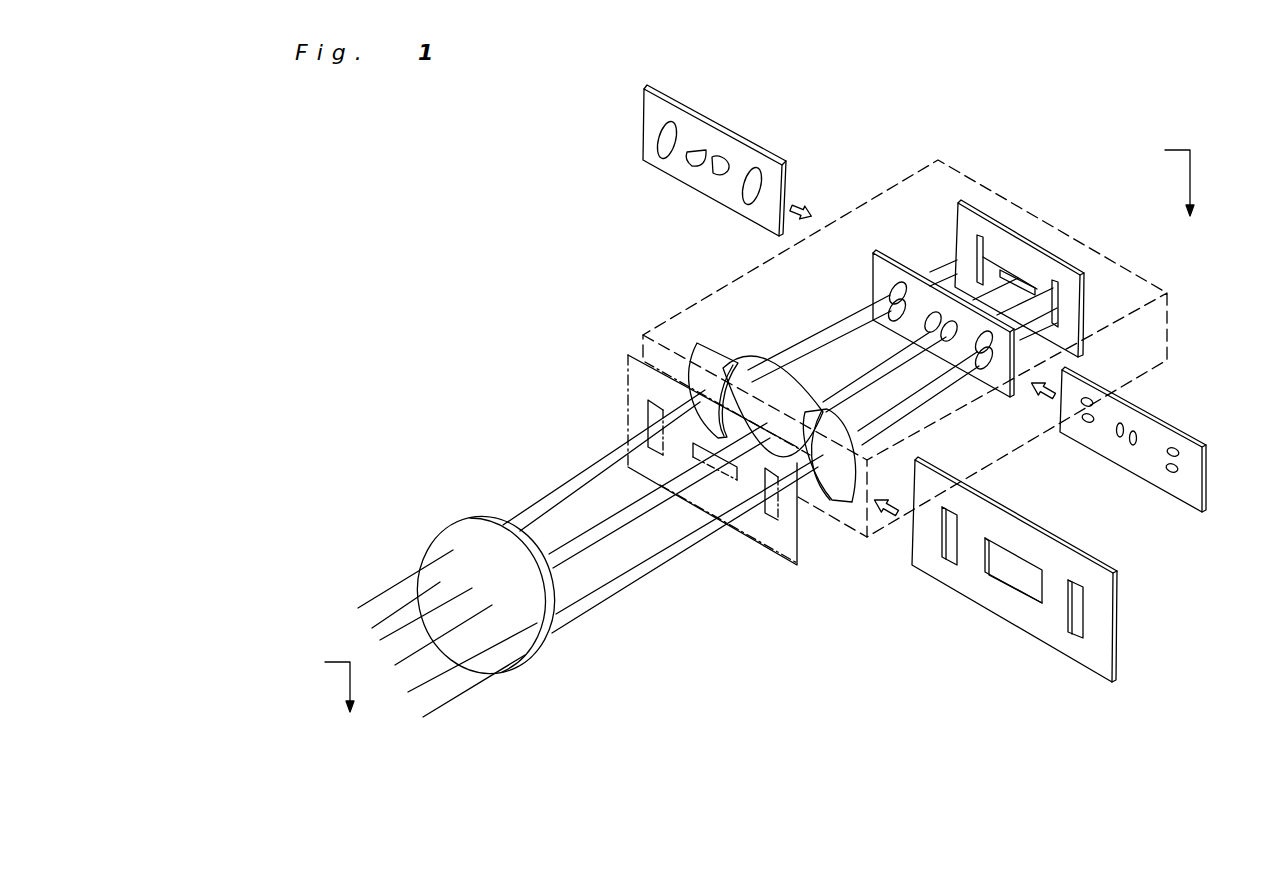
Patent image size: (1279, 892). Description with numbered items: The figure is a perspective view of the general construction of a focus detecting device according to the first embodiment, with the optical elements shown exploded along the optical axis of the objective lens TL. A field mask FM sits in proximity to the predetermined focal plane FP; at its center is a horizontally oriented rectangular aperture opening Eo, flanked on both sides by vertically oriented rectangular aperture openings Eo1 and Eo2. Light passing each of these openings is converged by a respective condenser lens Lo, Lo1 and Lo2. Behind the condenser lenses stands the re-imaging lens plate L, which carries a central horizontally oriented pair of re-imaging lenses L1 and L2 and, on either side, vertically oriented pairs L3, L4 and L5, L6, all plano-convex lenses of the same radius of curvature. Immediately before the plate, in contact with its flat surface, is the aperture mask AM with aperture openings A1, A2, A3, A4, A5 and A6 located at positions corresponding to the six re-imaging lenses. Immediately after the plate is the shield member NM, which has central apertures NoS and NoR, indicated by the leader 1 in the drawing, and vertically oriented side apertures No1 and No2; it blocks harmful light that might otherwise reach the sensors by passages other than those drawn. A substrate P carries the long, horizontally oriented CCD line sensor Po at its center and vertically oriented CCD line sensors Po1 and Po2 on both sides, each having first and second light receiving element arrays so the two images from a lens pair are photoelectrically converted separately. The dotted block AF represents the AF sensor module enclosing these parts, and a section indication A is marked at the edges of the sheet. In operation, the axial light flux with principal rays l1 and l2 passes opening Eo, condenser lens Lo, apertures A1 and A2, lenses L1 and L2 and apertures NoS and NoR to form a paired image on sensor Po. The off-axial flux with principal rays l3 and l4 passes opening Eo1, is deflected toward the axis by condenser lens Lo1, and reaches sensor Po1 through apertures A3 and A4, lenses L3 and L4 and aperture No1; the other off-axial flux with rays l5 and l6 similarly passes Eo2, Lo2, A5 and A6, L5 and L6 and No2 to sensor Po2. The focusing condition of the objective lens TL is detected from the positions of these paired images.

The shield member NM is at (645, 90).
The aperture No1 is at (667, 121).
The aperture NoR is at (698, 149).
The aperture NoS is at (721, 157).
The aperture No2 is at (753, 168).
The aperture pair 1 is at (708, 167).
The AF sensor module AF is at (873, 206).
The re-imaging lens plate L is at (872, 260).
The re-imaging lens L1 is at (949, 340).
The re-imaging lens L2 is at (931, 330).
The re-imaging lens L3 is at (898, 287).
The re-imaging lens L4 is at (890, 300).
The re-imaging lens L5 is at (993, 345).
The re-imaging lens L6 is at (983, 368).
The field plate P is at (1007, 278).
The CCD line sensor Po1 is at (953, 238).
The CCD line sensor Po is at (1027, 284).
The CCD line sensor Po2 is at (1060, 306).
The condenser lens Lo1 is at (706, 343).
The condenser lens Lo is at (772, 388).
The condenser lens Lo2 is at (834, 487).
The predetermined focal plane FP is at (628, 355).
The objective lens TL is at (473, 668).
The principal ray l1 is at (577, 537).
The principal ray l2 is at (567, 560).
The principal ray l3 is at (538, 517).
The principal ray l4 is at (542, 502).
The principal ray l5 is at (583, 620).
The principal ray l6 is at (595, 587).
The aperture mask AM is at (1162, 488).
The aperture opening A1 is at (1136, 440).
The aperture opening A2 is at (1120, 438).
The aperture opening A3 is at (1093, 404).
The aperture opening A4 is at (1088, 423).
The aperture opening A5 is at (1179, 453).
The aperture opening A6 is at (1174, 472).
The field mask FM is at (1113, 565).
The rectangular aperture opening Eo1 is at (950, 563).
The rectangular aperture opening Eo is at (1010, 592).
The rectangular aperture opening Eo2 is at (1075, 635).
The section line A- A is at (770, 431).